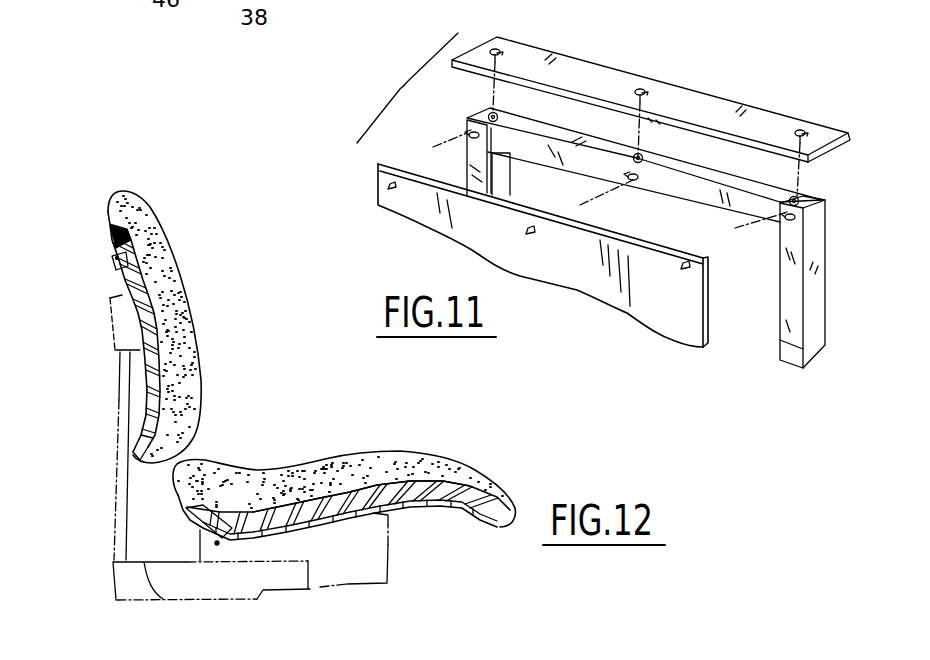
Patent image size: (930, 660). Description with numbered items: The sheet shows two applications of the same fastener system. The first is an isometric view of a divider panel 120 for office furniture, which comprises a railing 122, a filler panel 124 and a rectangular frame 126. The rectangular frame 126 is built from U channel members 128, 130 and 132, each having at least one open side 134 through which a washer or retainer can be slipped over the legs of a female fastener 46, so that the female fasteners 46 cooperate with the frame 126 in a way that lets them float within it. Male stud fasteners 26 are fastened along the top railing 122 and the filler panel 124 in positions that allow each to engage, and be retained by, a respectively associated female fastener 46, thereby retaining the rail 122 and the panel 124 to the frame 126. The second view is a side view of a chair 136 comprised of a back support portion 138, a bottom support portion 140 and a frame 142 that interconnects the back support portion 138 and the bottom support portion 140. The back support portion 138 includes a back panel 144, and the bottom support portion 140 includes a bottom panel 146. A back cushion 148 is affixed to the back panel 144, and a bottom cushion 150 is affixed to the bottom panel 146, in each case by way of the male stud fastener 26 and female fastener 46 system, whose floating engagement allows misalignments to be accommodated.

In FIG. 11, the male stud fastener 26 is at (377, 177).
In FIG. 12, the male stud fastener 26 is at (133, 237).
In FIG. 11, the female fastener 46 is at (465, 135).
In FIG. 12, the female fastener 46 is at (117, 258).
In FIG. 11, the divider panel 120 is at (679, 53).
In FIG. 11, the railing 122 is at (775, 110).
In FIG. 11, the filler panel 124 is at (645, 318).
In FIG. 11, the rectangular frame 126 is at (763, 360).
In FIG. 11, the U channel member 128 is at (465, 142).
In FIG. 11, the U channel member 130 is at (562, 122).
In FIG. 11, the U channel member 132 is at (790, 268).
In FIG. 11, the open side 134 is at (509, 187).
In FIG. 12, the chair 136 is at (253, 390).
In FIG. 12, the back support portion 138 is at (103, 363).
In FIG. 12, the bottom support portion 140 is at (373, 593).
In FIG. 12, the frame 142 is at (123, 613).
In FIG. 12, the back panel 144 is at (125, 275).
In FIG. 12, the bottom panel 146 is at (368, 512).
In FIG. 12, the back cushion 148 is at (180, 277).
In FIG. 12, the bottom cushion 150 is at (397, 453).